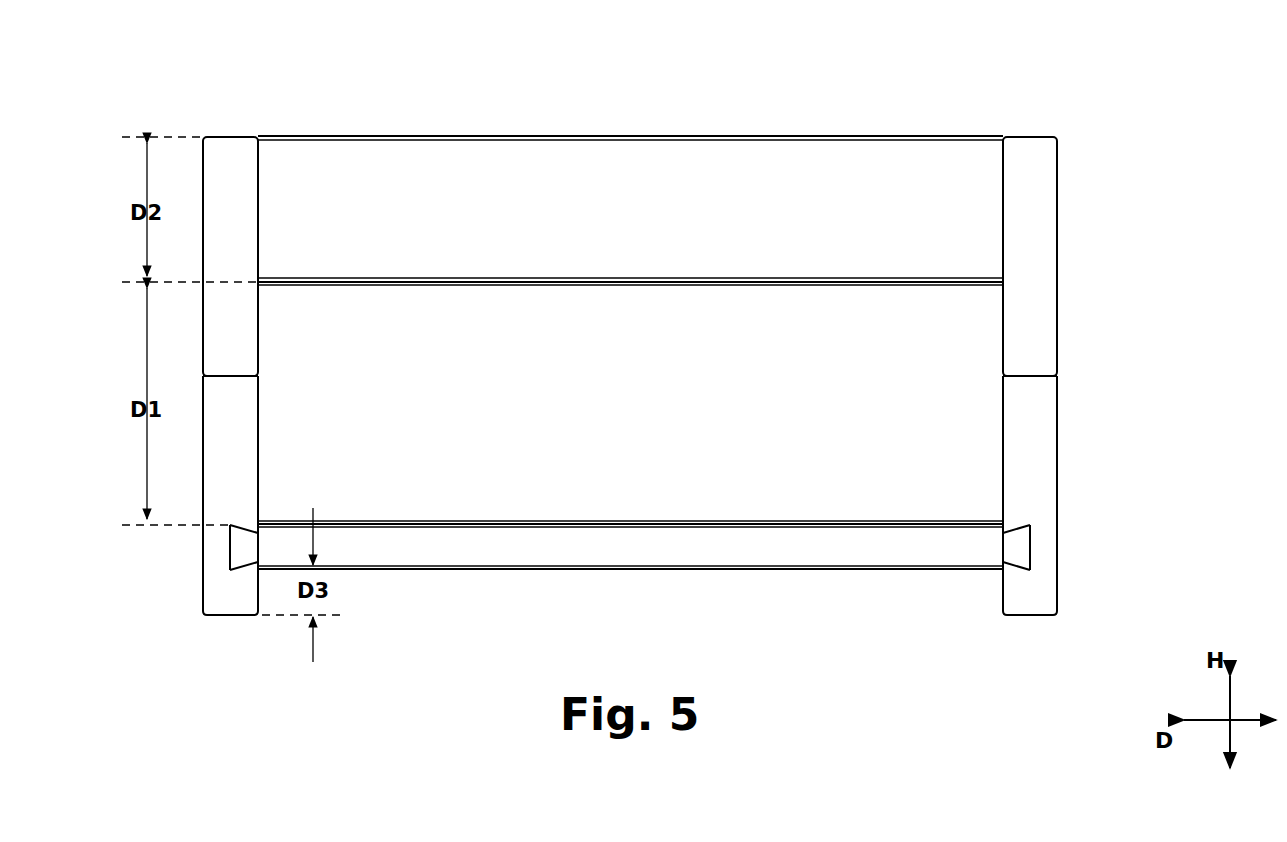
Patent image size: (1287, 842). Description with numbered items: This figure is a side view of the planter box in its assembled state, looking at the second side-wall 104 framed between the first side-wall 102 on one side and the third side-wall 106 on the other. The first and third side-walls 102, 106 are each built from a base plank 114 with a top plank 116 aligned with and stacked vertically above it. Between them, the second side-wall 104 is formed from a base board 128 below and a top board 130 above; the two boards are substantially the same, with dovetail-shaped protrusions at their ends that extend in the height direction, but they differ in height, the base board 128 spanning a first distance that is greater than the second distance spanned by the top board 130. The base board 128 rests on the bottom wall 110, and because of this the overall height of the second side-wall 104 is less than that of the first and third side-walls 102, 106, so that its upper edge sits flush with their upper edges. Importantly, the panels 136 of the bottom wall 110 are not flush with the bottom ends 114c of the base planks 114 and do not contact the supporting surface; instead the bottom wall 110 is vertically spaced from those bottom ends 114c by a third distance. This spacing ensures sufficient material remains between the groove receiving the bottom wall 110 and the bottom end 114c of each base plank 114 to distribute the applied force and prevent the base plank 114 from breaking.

The first side-wall 102 is at (240, 630).
The second side-wall 104 is at (502, 130).
The third side-wall 106 is at (1017, 126).
The bottom wall 110 is at (886, 582).
The base plank 114 is at (222, 552).
The bottom end of base plank 114c is at (228, 618).
The top plank 116 is at (237, 177).
The base board 128 is at (623, 420).
The top board 130 is at (623, 218).
The panels 136 is at (600, 548).